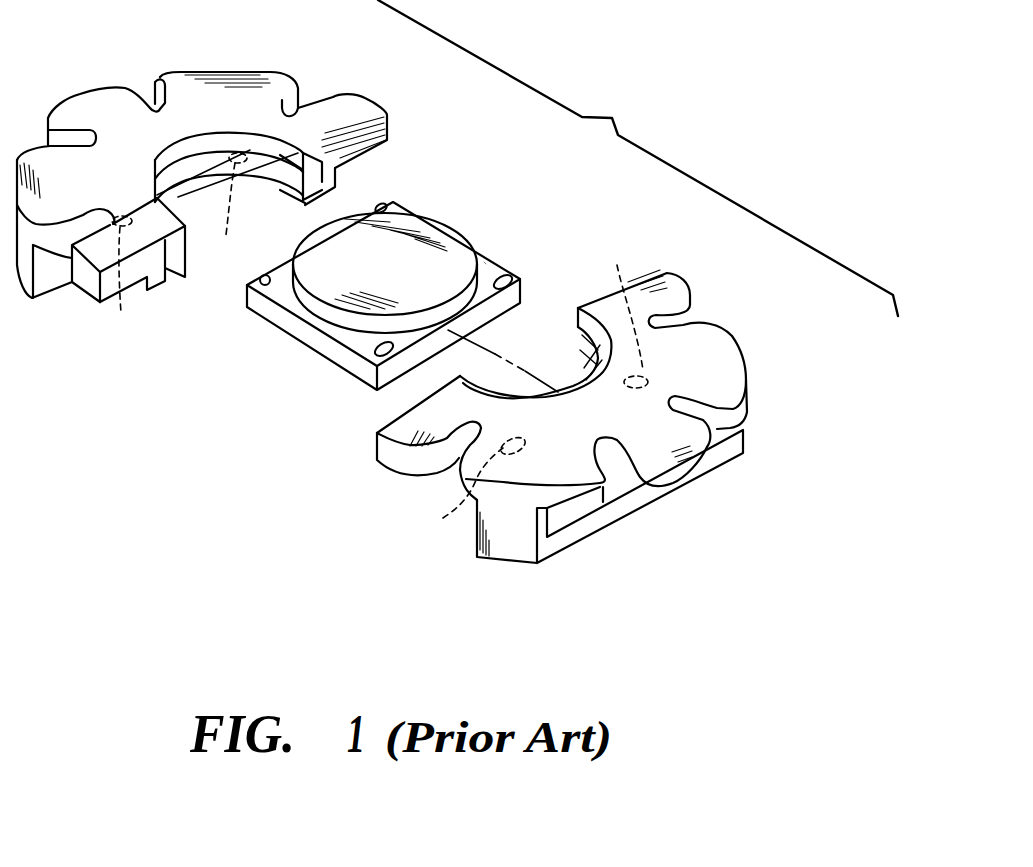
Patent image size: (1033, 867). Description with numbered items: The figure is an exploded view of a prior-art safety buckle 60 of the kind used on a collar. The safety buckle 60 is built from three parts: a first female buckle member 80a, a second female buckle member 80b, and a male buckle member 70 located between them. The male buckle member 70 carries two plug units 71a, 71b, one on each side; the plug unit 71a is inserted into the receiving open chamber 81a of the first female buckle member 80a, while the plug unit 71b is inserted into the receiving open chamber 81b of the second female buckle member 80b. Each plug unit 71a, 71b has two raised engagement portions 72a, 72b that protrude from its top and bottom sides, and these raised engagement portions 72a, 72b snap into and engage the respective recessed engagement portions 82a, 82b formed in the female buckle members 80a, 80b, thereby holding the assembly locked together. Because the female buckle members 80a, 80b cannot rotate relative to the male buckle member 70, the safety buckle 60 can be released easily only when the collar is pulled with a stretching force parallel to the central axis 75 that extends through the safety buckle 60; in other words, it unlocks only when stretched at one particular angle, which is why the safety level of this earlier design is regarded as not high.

The safety buckle 60 is at (638, 158).
The male buckle member 70 is at (443, 238).
The plug unit 71a is at (291, 304).
The plug unit 71b is at (484, 262).
The raised engagement portion 72a is at (390, 204).
The raised engagement portion 72b is at (516, 277).
The central axis 75 is at (495, 345).
The first female buckle member 80a is at (104, 102).
The second female buckle member 80b is at (722, 358).
The receiving open chamber 81a is at (268, 165).
The receiving open chamber 81b is at (575, 360).
The recessed engagement portion 82a is at (226, 235).
The recessed engagement portion 82b is at (518, 379).